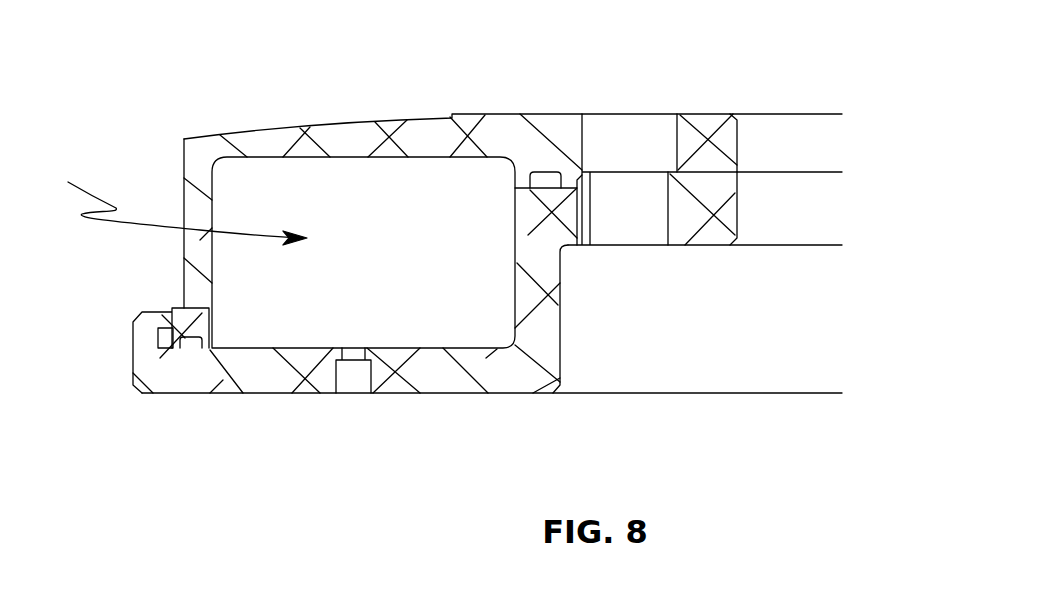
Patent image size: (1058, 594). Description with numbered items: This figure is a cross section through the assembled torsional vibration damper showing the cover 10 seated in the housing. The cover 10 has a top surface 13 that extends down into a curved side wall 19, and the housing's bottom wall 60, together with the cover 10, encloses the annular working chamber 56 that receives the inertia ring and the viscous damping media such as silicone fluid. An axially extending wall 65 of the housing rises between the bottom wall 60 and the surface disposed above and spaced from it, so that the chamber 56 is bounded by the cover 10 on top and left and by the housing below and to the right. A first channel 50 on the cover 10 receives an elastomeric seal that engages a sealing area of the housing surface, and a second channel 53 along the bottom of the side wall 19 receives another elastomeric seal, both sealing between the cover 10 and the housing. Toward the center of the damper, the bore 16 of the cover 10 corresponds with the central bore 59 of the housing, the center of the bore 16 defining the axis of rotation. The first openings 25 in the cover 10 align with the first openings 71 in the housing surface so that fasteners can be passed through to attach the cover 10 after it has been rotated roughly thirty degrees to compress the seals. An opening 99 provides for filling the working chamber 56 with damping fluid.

The cover 10 is at (518, 137).
The top surface 13 is at (383, 118).
The bore 16 is at (738, 145).
The side wall 19 is at (197, 253).
The first openings 25 is at (677, 140).
The first channel 50 is at (551, 172).
The second channel 53 is at (193, 345).
The working chamber 56 is at (174, 204).
The central bore 59 is at (738, 218).
The bottom wall 60 is at (460, 347).
The axially extending wall 65 is at (538, 275).
The first openings 71 is at (663, 213).
The opening 99 is at (355, 348).